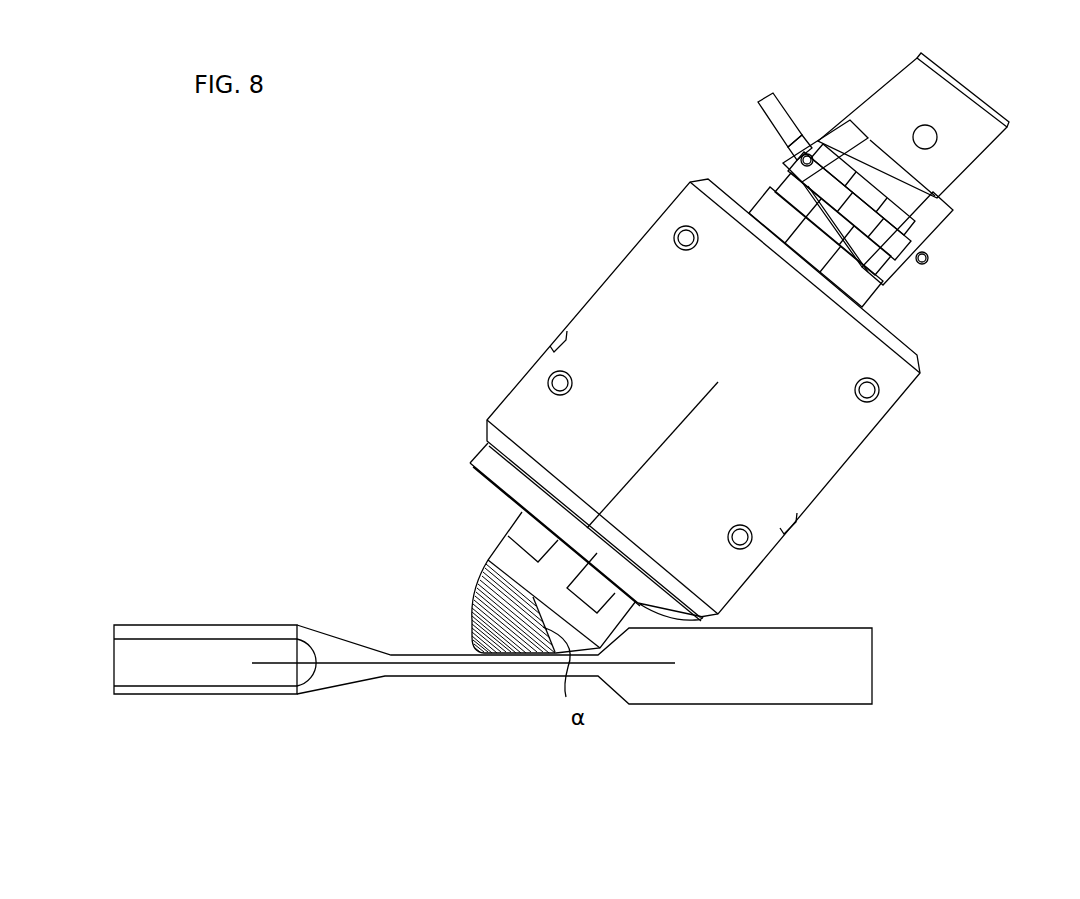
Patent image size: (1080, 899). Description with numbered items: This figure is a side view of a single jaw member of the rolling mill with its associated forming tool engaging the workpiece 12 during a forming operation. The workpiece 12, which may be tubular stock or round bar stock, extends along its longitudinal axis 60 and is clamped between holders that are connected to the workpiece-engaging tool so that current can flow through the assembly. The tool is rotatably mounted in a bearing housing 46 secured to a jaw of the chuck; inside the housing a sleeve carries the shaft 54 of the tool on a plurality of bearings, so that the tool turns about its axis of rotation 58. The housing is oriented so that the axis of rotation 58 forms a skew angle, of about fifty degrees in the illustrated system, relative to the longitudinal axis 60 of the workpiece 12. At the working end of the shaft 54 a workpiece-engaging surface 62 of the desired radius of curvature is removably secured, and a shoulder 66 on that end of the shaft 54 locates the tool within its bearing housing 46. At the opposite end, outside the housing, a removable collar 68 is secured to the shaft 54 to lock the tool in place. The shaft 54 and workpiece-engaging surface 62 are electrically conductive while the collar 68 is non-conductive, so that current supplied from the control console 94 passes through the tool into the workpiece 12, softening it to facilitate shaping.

The workpiece 12 is at (342, 682).
The bearing housing 46 is at (598, 292).
The shaft 54 is at (963, 88).
The axis of rotation 58 is at (678, 427).
The longitudinal axis 60 is at (268, 662).
The workpiece-engaging surface 62 is at (472, 608).
The shoulder 66 is at (502, 477).
The removable collar 68 is at (818, 138).
The control console / electrical flow path 94 is at (781, 115).